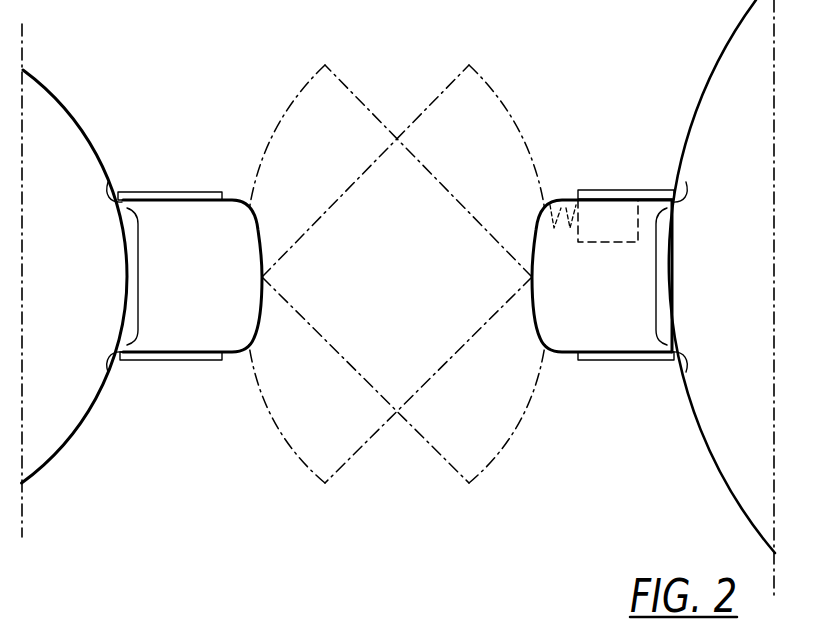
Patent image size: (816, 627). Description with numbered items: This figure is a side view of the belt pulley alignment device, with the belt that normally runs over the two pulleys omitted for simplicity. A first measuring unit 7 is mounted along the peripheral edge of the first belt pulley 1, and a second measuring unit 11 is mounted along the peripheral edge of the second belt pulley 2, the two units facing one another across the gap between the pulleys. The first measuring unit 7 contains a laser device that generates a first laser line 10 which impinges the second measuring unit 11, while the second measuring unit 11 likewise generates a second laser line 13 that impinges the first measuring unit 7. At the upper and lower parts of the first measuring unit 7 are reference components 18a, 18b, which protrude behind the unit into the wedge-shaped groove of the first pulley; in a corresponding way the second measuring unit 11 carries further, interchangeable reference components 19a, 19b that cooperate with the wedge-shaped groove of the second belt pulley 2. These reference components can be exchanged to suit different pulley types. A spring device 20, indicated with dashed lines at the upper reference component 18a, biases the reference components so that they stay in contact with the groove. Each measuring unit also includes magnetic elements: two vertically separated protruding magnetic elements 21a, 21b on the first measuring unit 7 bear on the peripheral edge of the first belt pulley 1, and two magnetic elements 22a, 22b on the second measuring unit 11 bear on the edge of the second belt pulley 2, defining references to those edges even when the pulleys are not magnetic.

The first belt pulley 1 is at (727, 60).
The second belt pulley 2 is at (67, 125).
The first measuring unit 7 is at (597, 213).
The first laser line 10 is at (303, 440).
The second measuring unit 11 is at (172, 213).
The second laser line 13 is at (467, 450).
The reference component 18a is at (620, 195).
The reference component 18b is at (630, 358).
The further reference component 19a is at (212, 193).
The further reference component 19b is at (145, 362).
The spring device 20 is at (568, 195).
The magnetic element 21a is at (685, 190).
The magnetic element 21b is at (683, 362).
The magnetic element 22a is at (105, 185).
The magnetic element 22b is at (112, 368).